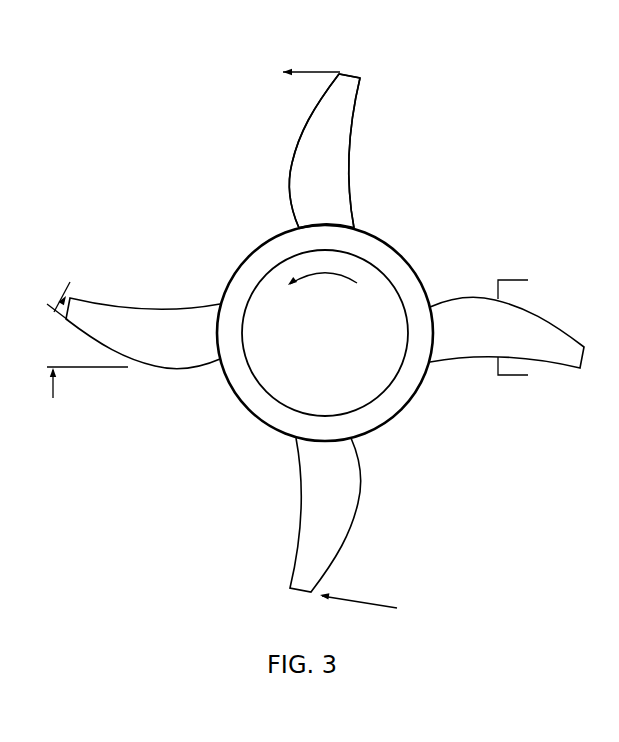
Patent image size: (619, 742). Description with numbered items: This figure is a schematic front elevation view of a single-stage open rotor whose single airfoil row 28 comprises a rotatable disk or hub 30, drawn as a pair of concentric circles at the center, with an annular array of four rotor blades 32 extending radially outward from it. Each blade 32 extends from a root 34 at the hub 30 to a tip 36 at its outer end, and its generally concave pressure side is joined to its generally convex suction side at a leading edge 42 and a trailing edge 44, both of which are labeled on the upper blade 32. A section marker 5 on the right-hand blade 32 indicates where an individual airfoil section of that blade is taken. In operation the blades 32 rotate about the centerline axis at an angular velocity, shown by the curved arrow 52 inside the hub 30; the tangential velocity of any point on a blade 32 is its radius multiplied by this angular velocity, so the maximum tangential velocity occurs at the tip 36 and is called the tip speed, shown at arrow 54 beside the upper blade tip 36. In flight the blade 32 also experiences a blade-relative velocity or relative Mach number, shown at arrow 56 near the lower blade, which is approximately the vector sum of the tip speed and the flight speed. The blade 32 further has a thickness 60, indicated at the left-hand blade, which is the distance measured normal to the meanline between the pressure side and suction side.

The airfoil row 28 is at (378, 42).
The hub 30 is at (398, 264).
The rotor blade 32 is at (355, 138).
The root 34 is at (336, 226).
The tip 36 is at (352, 75).
The leading edge 42 is at (289, 168).
The trailing edge 44 is at (352, 168).
The angular velocity arrow 52 is at (335, 288).
The tip speed arrow 54 is at (299, 72).
The blade-relative velocity arrow 56 is at (357, 608).
The thickness 60 is at (98, 368).
The section line 5- 5 is at (528, 280).